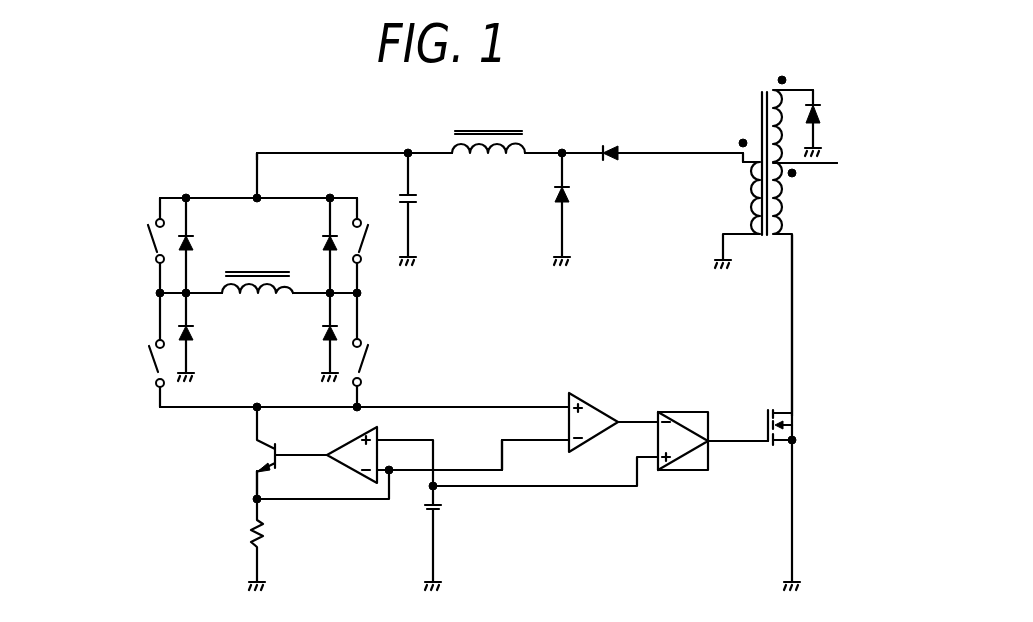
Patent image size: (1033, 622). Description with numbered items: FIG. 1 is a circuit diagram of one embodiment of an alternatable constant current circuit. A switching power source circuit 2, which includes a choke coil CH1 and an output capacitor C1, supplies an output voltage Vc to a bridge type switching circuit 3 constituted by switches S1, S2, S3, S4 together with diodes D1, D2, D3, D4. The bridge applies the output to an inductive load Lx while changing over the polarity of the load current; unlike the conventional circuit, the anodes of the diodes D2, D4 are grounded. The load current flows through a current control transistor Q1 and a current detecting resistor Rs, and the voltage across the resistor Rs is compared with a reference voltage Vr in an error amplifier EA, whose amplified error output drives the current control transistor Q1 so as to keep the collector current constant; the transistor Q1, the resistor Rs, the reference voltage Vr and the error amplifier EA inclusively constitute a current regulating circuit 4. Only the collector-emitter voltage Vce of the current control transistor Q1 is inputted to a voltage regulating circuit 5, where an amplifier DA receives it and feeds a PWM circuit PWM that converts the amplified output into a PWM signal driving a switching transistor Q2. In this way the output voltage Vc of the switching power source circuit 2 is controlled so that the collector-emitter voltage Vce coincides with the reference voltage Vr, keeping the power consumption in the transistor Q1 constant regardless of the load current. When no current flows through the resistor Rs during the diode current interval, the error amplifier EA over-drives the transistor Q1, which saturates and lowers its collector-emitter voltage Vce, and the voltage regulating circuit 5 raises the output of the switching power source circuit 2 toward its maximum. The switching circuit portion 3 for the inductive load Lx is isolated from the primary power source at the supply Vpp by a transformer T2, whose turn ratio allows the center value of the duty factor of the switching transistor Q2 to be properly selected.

The switching power source circuit 2 is at (605, 324).
The bridge type switching circuit 3 is at (113, 300).
The current regulating circuit 4 is at (213, 478).
The voltage regulating circuit 5 is at (570, 518).
The switch S1 is at (147, 247).
The switch S2 is at (150, 365).
The switch S3 is at (368, 222).
The switch S4 is at (371, 344).
The diode D1 is at (205, 245).
The diode D2 is at (197, 333).
The diode D3 is at (312, 245).
The diode D4 is at (320, 333).
The inductive load Lx is at (257, 297).
The choke coil CH1 is at (490, 127).
The output capacitor C1 is at (424, 209).
The transformer T2 is at (776, 246).
The primary supply voltage Vpp is at (845, 171).
The output voltage Vc is at (280, 143).
The current control transistor Q1 is at (274, 453).
The switching transistor Q2 is at (799, 412).
The current detecting resistor Rs is at (271, 544).
The error amplifier EA is at (344, 476).
The reference voltage Vr is at (447, 536).
The collector-emitter voltage Vce is at (535, 444).
The differential amplifier DA is at (592, 405).
The PWM circuit PWM is at (713, 430).